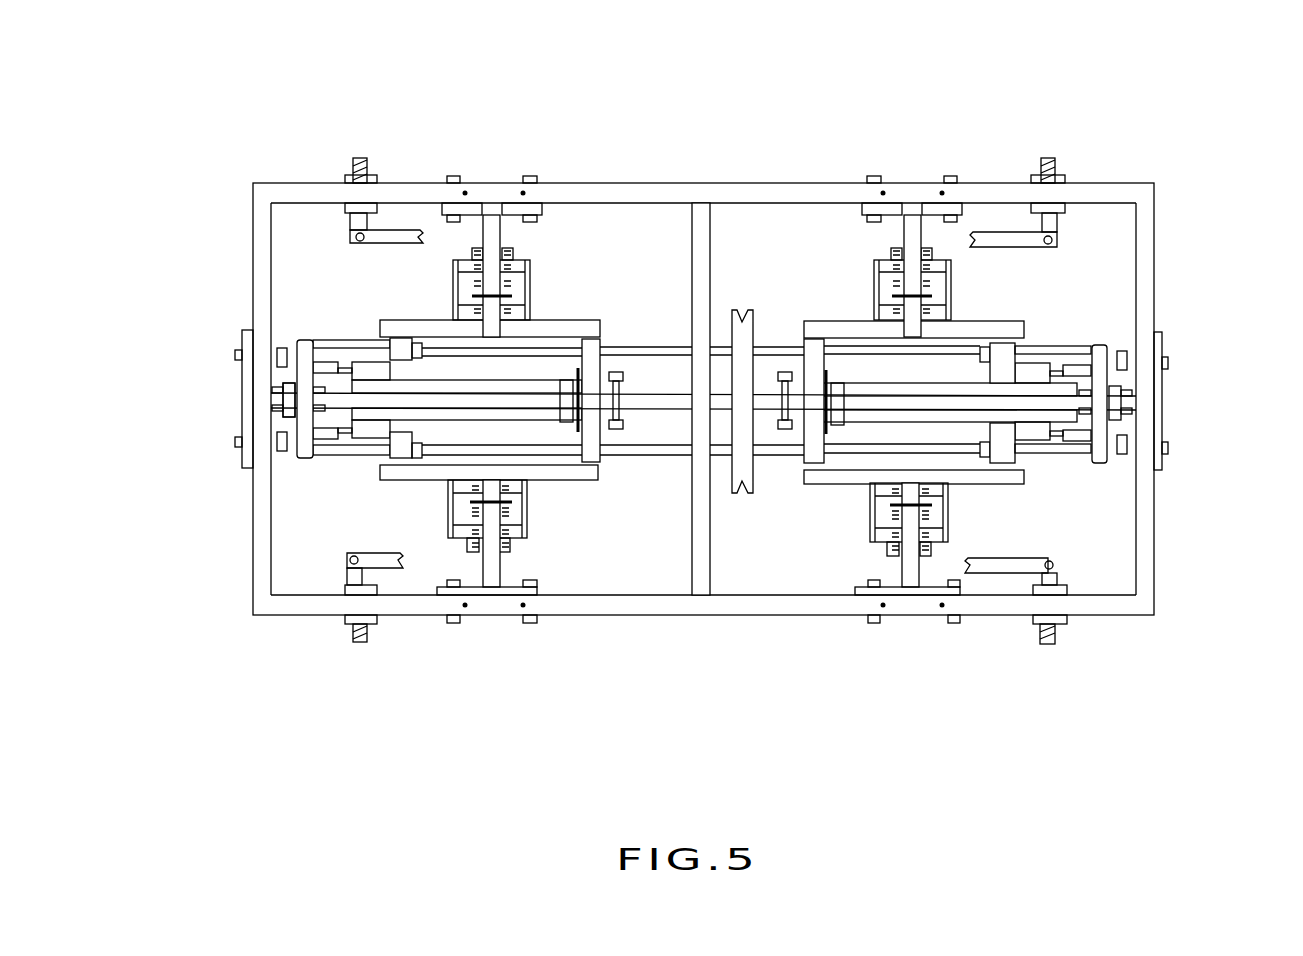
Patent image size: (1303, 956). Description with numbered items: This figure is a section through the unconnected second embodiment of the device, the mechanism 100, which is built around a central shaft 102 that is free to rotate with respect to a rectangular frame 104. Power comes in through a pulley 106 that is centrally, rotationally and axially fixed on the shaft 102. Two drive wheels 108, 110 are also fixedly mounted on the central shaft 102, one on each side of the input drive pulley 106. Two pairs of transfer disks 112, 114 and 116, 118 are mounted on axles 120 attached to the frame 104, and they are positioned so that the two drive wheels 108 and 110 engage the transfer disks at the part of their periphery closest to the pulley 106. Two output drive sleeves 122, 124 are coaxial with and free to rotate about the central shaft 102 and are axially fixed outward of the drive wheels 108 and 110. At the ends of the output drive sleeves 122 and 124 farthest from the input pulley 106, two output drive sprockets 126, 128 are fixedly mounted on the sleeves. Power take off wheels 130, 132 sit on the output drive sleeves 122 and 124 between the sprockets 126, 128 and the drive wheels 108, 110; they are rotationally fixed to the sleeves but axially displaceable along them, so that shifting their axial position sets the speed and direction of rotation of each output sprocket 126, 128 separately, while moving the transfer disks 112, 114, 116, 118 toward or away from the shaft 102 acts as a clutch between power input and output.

The mechanism 100 is at (708, 133).
The central shaft 102 is at (1048, 403).
The rectangular frame 104 is at (1148, 207).
The pulley 106 is at (748, 490).
The drive wheel 108 is at (807, 450).
The drive wheel 110 is at (582, 467).
The transfer disk 112 is at (557, 325).
The transfer disk 114 is at (410, 472).
The transfer disk 116 is at (843, 328).
The transfer disk 118 is at (988, 484).
The axle 120 is at (907, 568).
The output drive sleeve 122 is at (970, 385).
The output drive sleeve 124 is at (363, 420).
The output drive sprocket 126 is at (303, 420).
The output drive sprocket 128 is at (1100, 436).
The power take off wheel 130 is at (1017, 453).
The power take off wheel 132 is at (400, 445).